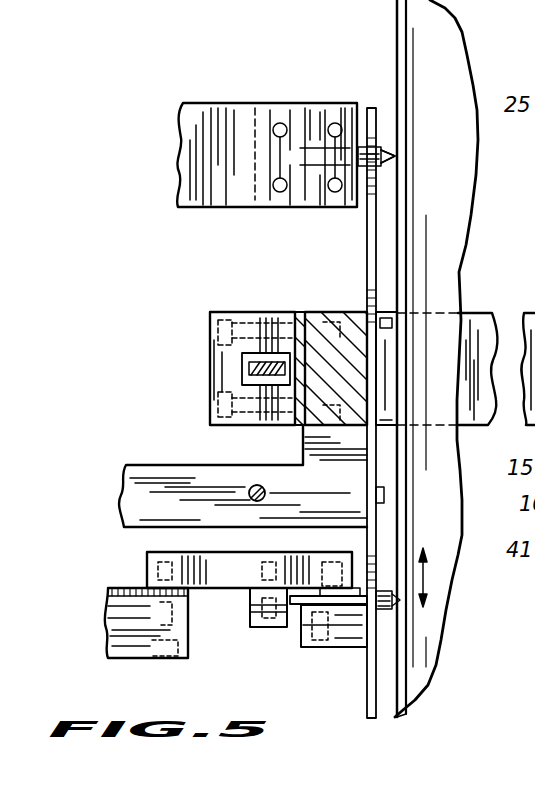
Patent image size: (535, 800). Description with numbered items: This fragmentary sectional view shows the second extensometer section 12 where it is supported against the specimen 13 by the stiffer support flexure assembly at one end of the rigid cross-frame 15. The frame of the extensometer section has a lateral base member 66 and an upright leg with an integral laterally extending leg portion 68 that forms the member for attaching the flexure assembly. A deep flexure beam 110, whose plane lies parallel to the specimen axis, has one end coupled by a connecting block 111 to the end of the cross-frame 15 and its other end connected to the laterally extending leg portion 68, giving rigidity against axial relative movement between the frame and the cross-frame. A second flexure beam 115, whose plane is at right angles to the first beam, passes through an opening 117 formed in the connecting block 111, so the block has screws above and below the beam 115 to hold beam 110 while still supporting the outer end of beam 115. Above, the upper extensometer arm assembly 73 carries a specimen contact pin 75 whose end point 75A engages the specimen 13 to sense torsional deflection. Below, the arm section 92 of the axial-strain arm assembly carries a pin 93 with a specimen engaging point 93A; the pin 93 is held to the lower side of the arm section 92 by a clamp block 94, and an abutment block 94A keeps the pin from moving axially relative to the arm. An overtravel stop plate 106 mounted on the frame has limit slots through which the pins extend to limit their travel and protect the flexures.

The second extensometer section 12 is at (229, 623).
The specimen 13 is at (397, 30).
The rigid cross-frame 15 is at (470, 332).
The lateral base member 66 is at (155, 487).
The laterally extending leg portion 68 is at (342, 340).
The upper extensometer arm assembly 73 is at (229, 104).
The specimen contact pin 75 is at (383, 148).
The end point 75A is at (398, 157).
The arm section 92 is at (170, 553).
The pin 93 is at (378, 590).
The specimen engaging point 93A is at (398, 600).
The clamp block 94 is at (337, 649).
The abutment block 94A is at (276, 630).
The overtravel stop plate 106 is at (366, 229).
The flexure beam 110 is at (296, 312).
The connecting block 111 is at (243, 312).
The second flexure beam 115 is at (250, 372).
The opening 117 is at (245, 365).